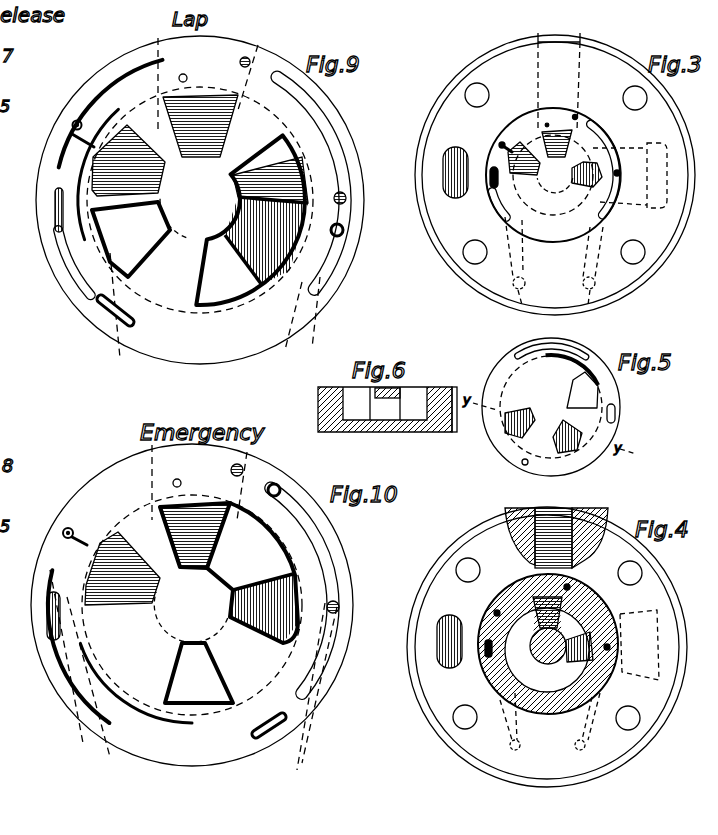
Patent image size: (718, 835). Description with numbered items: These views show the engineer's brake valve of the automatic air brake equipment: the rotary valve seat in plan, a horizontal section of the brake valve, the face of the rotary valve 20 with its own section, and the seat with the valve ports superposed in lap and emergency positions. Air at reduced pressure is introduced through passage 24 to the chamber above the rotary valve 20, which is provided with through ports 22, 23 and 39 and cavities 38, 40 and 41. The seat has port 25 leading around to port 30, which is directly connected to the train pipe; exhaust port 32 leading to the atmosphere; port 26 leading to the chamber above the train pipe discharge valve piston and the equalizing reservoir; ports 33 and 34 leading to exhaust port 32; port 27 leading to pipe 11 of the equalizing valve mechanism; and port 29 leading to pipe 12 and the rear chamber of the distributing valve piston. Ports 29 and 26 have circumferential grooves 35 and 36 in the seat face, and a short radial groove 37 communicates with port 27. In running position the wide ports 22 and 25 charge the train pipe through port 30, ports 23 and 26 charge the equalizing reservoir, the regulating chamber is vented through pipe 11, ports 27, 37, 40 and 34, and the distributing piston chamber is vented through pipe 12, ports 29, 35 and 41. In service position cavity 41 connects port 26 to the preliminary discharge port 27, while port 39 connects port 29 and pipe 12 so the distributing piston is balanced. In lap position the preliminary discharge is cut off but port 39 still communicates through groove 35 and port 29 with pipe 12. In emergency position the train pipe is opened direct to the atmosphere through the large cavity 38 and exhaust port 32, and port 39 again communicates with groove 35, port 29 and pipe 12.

In FIG. 3, the pipe 11 is at (515, 261).
In FIG. 4, the pipe 11 is at (512, 731).
In FIG. 3, the pipe 12 is at (592, 266).
In FIG. 4, the pipe 12 is at (583, 731).
In FIG. 5, the rotary valve 20 is at (495, 373).
In FIG. 9, the through port 22 is at (150, 243).
In FIG. 5, the through port 22 is at (594, 398).
In FIG. 10, the through port 22 is at (218, 703).
In FIG. 9, the through port 23 is at (110, 317).
In FIG. 5, the through port 23 is at (614, 417).
In FIG. 10, the through port 23 is at (260, 743).
In FIG. 3, the passage 24 is at (447, 167).
In FIG. 4, the passage 24 is at (445, 622).
In FIG. 9, the port 25 is at (127, 150).
In FIG. 3, the port 25 is at (520, 142).
In FIG. 10, the port 25 is at (133, 522).
In FIG. 4, the port 25 is at (523, 680).
In FIG. 9, the port 26 is at (55, 213).
In FIG. 3, the port 26 is at (492, 185).
In FIG. 10, the port 26 is at (48, 627).
In FIG. 4, the port 26 is at (488, 652).
In FIG. 9, the port 27 is at (75, 122).
In FIG. 3, the port 27 is at (499, 145).
In FIG. 10, the port 27 is at (66, 528).
In FIG. 4, the port 27 is at (494, 612).
In FIG. 9, the port 29 is at (347, 200).
In FIG. 3, the port 29 is at (618, 176).
In FIG. 10, the port 29 is at (340, 608).
In FIG. 4, the port 29 is at (608, 649).
In FIG. 9, the port 30 is at (293, 187).
In FIG. 3, the port 30 is at (593, 190).
In FIG. 10, the port 30 is at (282, 590).
In FIG. 4, the port 30 is at (603, 633).
In FIG. 9, the exhaust port 32 is at (218, 115).
In FIG. 3, the exhaust port 32 is at (557, 130).
In FIG. 10, the exhaust port 32 is at (193, 507).
In FIG. 4, the exhaust port 32 is at (557, 503).
In FIG. 9, the port 33 is at (248, 58).
In FIG. 3, the port 33 is at (577, 116).
In FIG. 10, the port 33 is at (233, 467).
In FIG. 4, the port 33 is at (570, 587).
In FIG. 9, the port 34 is at (187, 78).
In FIG. 3, the port 34 is at (547, 124).
In FIG. 10, the port 34 is at (182, 475).
In FIG. 4, the port 34 is at (538, 595).
In FIG. 9, the circumferential groove 35 is at (328, 133).
In FIG. 3, the circumferential groove 35 is at (607, 135).
In FIG. 10, the circumferential groove 35 is at (312, 533).
In FIG. 9, the circumferential groove 36 is at (77, 270).
In FIG. 3, the circumferential groove 36 is at (501, 204).
In FIG. 9, the radial groove 37 is at (72, 136).
In FIG. 3, the radial groove 37 is at (508, 140).
In FIG. 10, the radial groove 37 is at (88, 540).
In FIG. 9, the cavity 38 is at (287, 146).
In FIG. 6, the cavity 38 is at (395, 405).
In FIG. 5, the cavity 38 is at (512, 432).
In FIG. 10, the cavity 38 is at (213, 535).
In FIG. 9, the through port 39 is at (343, 233).
In FIG. 5, the through port 39 is at (522, 463).
In FIG. 10, the through port 39 is at (268, 490).
In FIG. 9, the cavity 40 is at (97, 100).
In FIG. 5, the cavity 40 is at (562, 359).
In FIG. 9, the cavity 41 is at (128, 72).
In FIG. 5, the cavity 41 is at (520, 352).
In FIG. 10, the cavity 41 is at (110, 718).